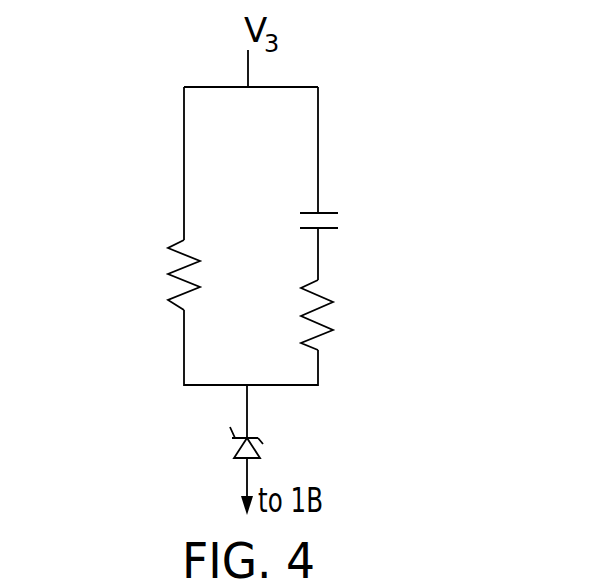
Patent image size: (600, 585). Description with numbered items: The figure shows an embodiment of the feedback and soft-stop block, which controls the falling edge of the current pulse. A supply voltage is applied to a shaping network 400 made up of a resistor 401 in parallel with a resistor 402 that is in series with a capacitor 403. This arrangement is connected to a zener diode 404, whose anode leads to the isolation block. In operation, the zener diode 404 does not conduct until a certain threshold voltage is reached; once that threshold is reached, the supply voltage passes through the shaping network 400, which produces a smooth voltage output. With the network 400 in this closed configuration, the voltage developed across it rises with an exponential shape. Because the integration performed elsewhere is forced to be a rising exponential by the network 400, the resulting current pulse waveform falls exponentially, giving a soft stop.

The shaping network 400 is at (180, 152).
The resistor 401 is at (170, 250).
The resistor 402 is at (325, 292).
The capacitor 403 is at (326, 213).
The zener diode 404 is at (258, 458).